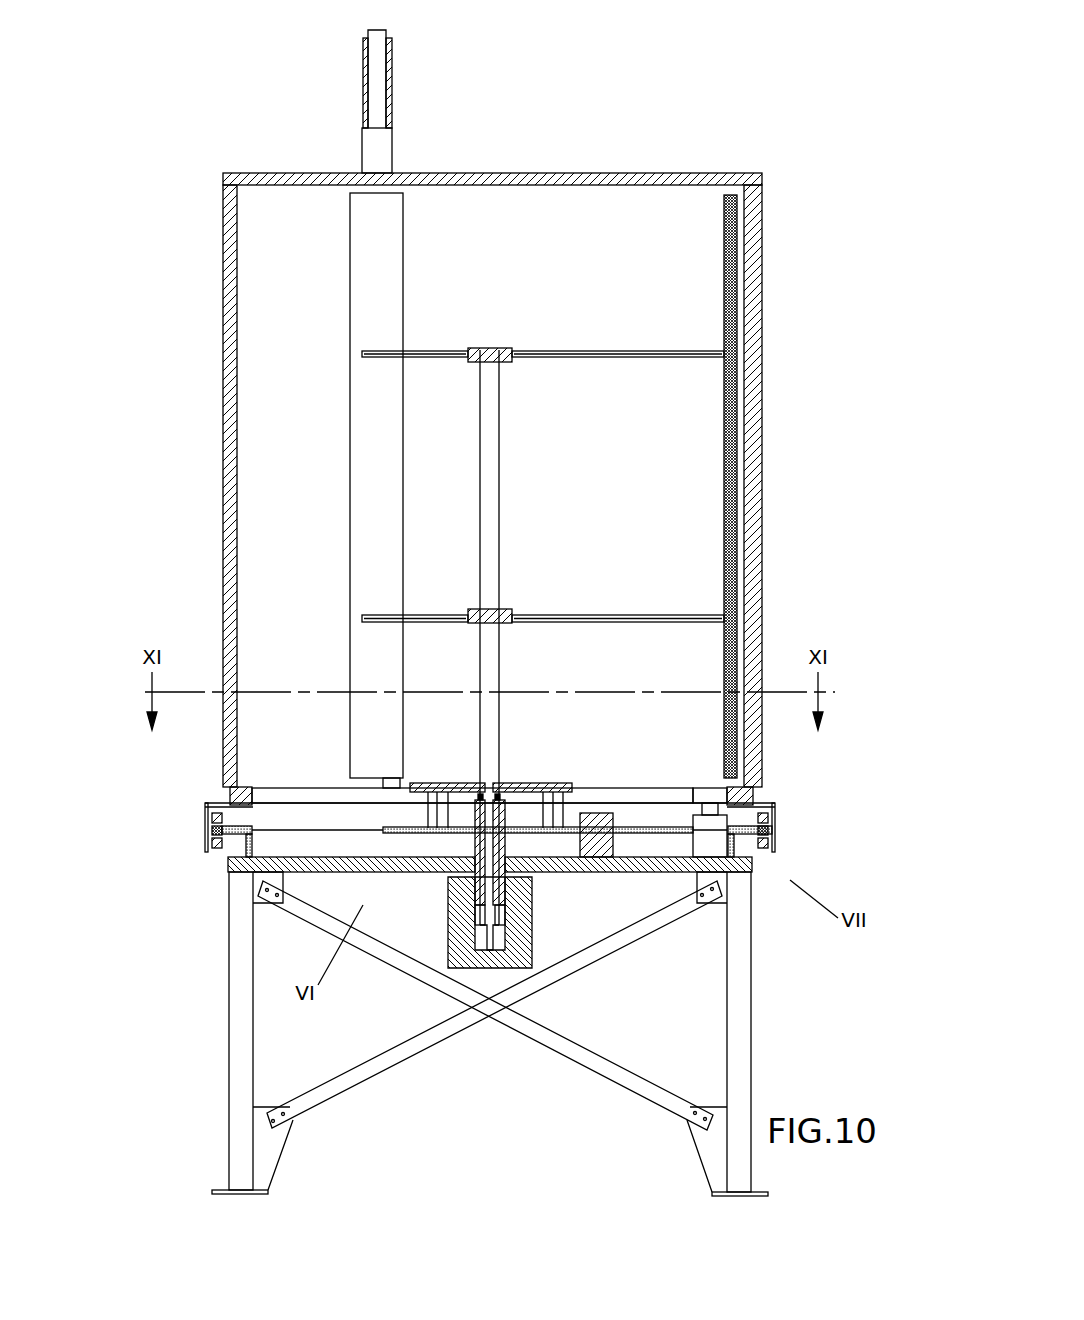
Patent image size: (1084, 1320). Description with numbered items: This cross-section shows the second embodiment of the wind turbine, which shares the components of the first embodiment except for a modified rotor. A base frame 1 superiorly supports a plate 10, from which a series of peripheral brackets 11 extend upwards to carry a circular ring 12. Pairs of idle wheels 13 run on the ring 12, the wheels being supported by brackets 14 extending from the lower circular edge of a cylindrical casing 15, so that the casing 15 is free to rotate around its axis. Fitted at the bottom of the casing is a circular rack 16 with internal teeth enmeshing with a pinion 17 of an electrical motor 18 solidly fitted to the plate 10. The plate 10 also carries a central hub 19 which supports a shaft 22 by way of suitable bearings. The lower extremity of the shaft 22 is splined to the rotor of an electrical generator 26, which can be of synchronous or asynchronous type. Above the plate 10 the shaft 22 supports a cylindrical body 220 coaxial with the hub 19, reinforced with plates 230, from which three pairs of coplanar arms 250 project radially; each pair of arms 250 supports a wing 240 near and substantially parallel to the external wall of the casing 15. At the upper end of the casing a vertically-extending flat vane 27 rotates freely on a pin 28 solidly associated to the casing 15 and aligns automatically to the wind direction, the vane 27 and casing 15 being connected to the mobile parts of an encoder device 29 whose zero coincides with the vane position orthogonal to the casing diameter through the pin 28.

The base frame 1 is at (740, 1075).
The plate 10 is at (232, 880).
The peripheral brackets 11 is at (305, 805).
The circular ring 12 is at (205, 830).
The idle wheels 13 is at (210, 818).
The brackets 14 is at (210, 812).
The cylindrical casing 15 is at (227, 458).
The circular rack 16 is at (747, 745).
The pinion 17 is at (707, 795).
The electrical motor 18 is at (715, 840).
The central hub 19 is at (473, 850).
The shaft 22 is at (480, 935).
The electrical generator 26 is at (510, 957).
The flat vane 27 is at (365, 95).
The pin 28 is at (378, 63).
The encoder device 29 is at (597, 835).
The cylindrical body 220 is at (490, 490).
The plates 230 is at (482, 792).
The wing 240 is at (370, 302).
The pairs of coplanar arms 250 is at (432, 350).